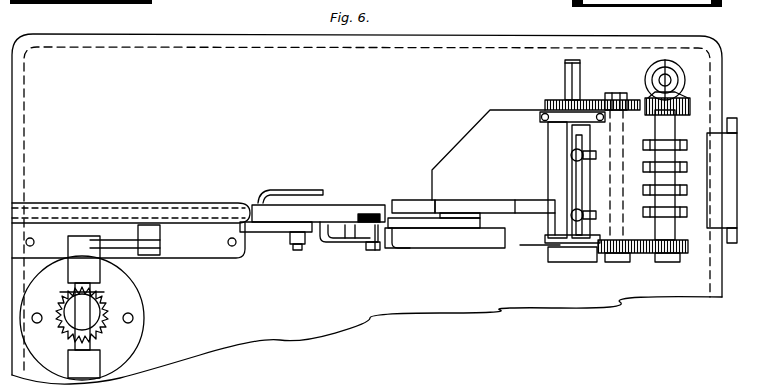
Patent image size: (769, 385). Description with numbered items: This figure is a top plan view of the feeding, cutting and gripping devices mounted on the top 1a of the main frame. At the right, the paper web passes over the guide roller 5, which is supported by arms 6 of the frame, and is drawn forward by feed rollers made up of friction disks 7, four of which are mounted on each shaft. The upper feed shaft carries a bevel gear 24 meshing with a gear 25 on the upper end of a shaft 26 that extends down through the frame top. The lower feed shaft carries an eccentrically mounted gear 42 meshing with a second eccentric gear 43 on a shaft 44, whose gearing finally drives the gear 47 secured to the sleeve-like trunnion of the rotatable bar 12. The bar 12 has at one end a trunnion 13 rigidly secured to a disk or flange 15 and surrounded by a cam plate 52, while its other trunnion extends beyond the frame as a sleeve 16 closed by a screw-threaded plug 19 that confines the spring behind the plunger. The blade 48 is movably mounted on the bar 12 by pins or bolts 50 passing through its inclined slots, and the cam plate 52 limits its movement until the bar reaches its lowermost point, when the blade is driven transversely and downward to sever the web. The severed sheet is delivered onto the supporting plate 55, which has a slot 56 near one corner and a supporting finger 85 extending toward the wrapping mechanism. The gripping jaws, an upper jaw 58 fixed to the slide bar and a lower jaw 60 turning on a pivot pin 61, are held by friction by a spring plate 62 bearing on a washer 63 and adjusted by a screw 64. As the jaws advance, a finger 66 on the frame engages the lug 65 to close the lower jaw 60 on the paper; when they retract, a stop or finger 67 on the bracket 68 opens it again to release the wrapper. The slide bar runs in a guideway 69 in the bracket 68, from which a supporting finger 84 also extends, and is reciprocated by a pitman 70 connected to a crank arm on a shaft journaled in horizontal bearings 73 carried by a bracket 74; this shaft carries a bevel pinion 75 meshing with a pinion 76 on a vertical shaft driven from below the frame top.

The top of the main frame 1a is at (248, 45).
The bracket 68 is at (50, 236).
The pitman 70 is at (233, 258).
The guideway 69 is at (120, 245).
The supporting finger 84 is at (287, 203).
The stop or finger 67 is at (255, 232).
The spring plate 62 is at (330, 240).
The screw 64 is at (352, 243).
The pivot pin 61 is at (367, 248).
The lug 65 is at (370, 228).
The lower jaw 60 is at (375, 244).
The washer 63 is at (375, 250).
The supporting finger 85 is at (413, 203).
The supporting plate 55 is at (458, 163).
The upper jaw 58 is at (412, 228).
The slot 56 is at (478, 218).
The finger 66 is at (460, 248).
The screw-threaded plug 19 is at (580, 60).
The sleeve 16 is at (580, 88).
The gear 47 is at (548, 100).
The shaft 44 is at (618, 95).
The shaft 26 is at (670, 78).
The gear 25 is at (665, 60).
The bevel gear 24 is at (690, 100).
The bar 12 is at (567, 170).
The blade 48 is at (583, 183).
The pins or bolts 50 is at (592, 155).
The disk or flange 15 is at (553, 238).
The friction disks 7 is at (687, 146).
The guide roller 5 is at (737, 168).
The arms 6 is at (737, 125).
The eccentrically mounted gear 43 is at (625, 262).
The eccentrically mounted gear 42 is at (672, 262).
The trunnion 13 is at (570, 262).
The cam plate 52 is at (553, 248).
The bracket 74 is at (135, 315).
The horizontal bearings 73 is at (87, 353).
The pinion 76 is at (62, 330).
The bevel pinion 75 is at (60, 290).